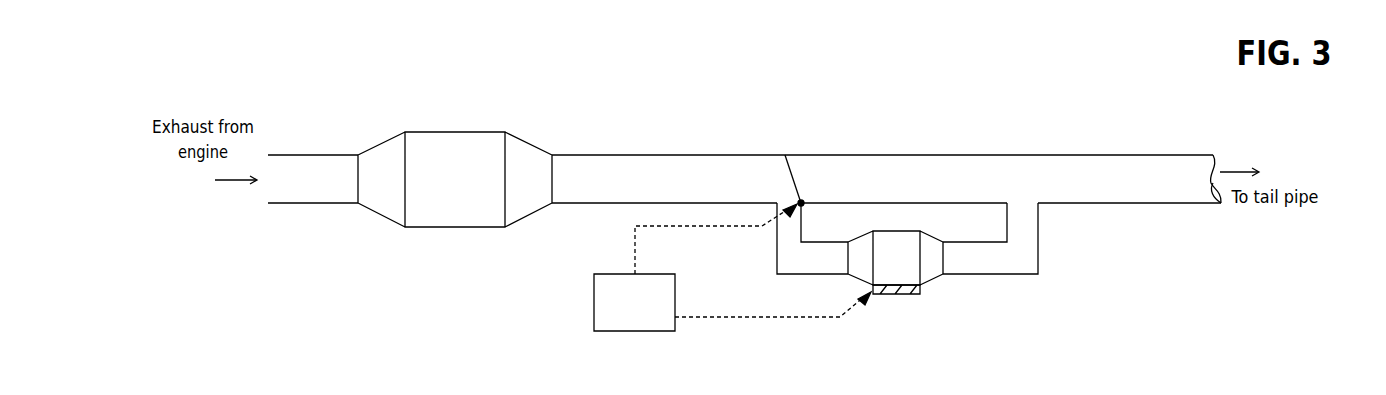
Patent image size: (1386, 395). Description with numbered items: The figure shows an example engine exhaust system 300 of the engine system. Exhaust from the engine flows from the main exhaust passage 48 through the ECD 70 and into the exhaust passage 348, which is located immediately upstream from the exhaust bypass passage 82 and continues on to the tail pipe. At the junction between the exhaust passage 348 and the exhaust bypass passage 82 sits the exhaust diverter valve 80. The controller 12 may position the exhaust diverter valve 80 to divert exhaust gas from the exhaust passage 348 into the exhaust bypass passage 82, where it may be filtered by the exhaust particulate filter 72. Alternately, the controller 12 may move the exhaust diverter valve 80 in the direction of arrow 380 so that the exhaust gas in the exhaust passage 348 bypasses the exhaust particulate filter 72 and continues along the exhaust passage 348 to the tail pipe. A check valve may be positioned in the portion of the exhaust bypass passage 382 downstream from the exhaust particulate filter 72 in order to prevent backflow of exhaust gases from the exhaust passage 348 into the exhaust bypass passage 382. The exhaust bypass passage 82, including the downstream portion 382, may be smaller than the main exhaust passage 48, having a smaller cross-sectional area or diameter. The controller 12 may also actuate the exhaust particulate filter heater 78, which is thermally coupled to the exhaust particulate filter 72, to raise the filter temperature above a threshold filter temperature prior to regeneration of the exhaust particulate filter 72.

The engine exhaust system 300 is at (1249, 115).
The main exhaust passage 48 is at (300, 190).
The ECD 70 is at (438, 190).
The exhaust passage 348 is at (628, 190).
The arrow 380 is at (761, 201).
The exhaust diverter valve 80 is at (800, 200).
The exhaust bypass passage 82 is at (802, 272).
The portion of the exhaust bypass passage downstream from the exhaust particulate fi 382 is at (968, 272).
The exhaust particulate filter 72 is at (884, 268).
The exhaust particulate filter heater 78 is at (902, 296).
The controller 12 is at (626, 310).